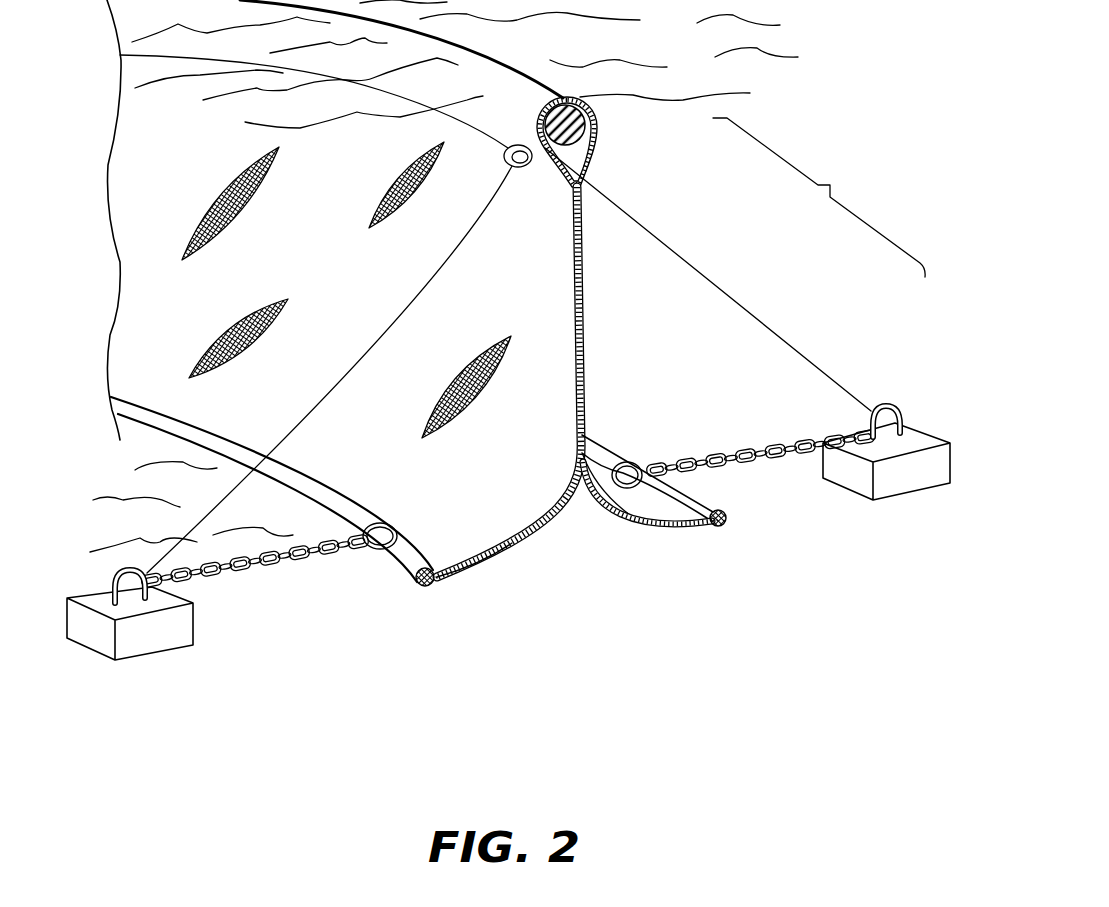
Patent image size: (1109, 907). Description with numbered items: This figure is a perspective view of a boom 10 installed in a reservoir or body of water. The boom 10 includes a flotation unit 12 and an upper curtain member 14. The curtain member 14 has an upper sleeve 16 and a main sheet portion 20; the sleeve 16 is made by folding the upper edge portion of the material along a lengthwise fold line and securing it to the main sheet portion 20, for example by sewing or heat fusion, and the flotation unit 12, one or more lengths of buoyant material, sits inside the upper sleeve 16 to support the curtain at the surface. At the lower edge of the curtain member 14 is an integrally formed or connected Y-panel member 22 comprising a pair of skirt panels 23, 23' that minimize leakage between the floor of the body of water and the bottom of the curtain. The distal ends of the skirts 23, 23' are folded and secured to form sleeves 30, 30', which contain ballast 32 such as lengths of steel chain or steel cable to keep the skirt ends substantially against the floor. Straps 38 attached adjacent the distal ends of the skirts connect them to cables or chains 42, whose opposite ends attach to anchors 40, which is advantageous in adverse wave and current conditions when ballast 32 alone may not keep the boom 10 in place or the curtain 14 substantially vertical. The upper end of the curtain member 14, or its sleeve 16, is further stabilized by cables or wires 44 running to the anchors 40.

The boom 10 is at (831, 183).
The flotation unit 12 is at (585, 127).
The upper curtain member 14 is at (551, 382).
The upper sleeve 16 is at (594, 150).
The main sheet portion 20 is at (584, 331).
The Y-panel member 22 is at (580, 520).
The skirt panel 23 is at (488, 590).
The skirt panel 23' is at (647, 537).
The sleeve 30 is at (402, 618).
The sleeve 30' is at (740, 549).
The ballast 32 is at (421, 584).
The strap 38 is at (388, 523).
The anchor 40 is at (185, 640).
The cable or chain 42 is at (253, 574).
The cable or wire 44 is at (386, 333).